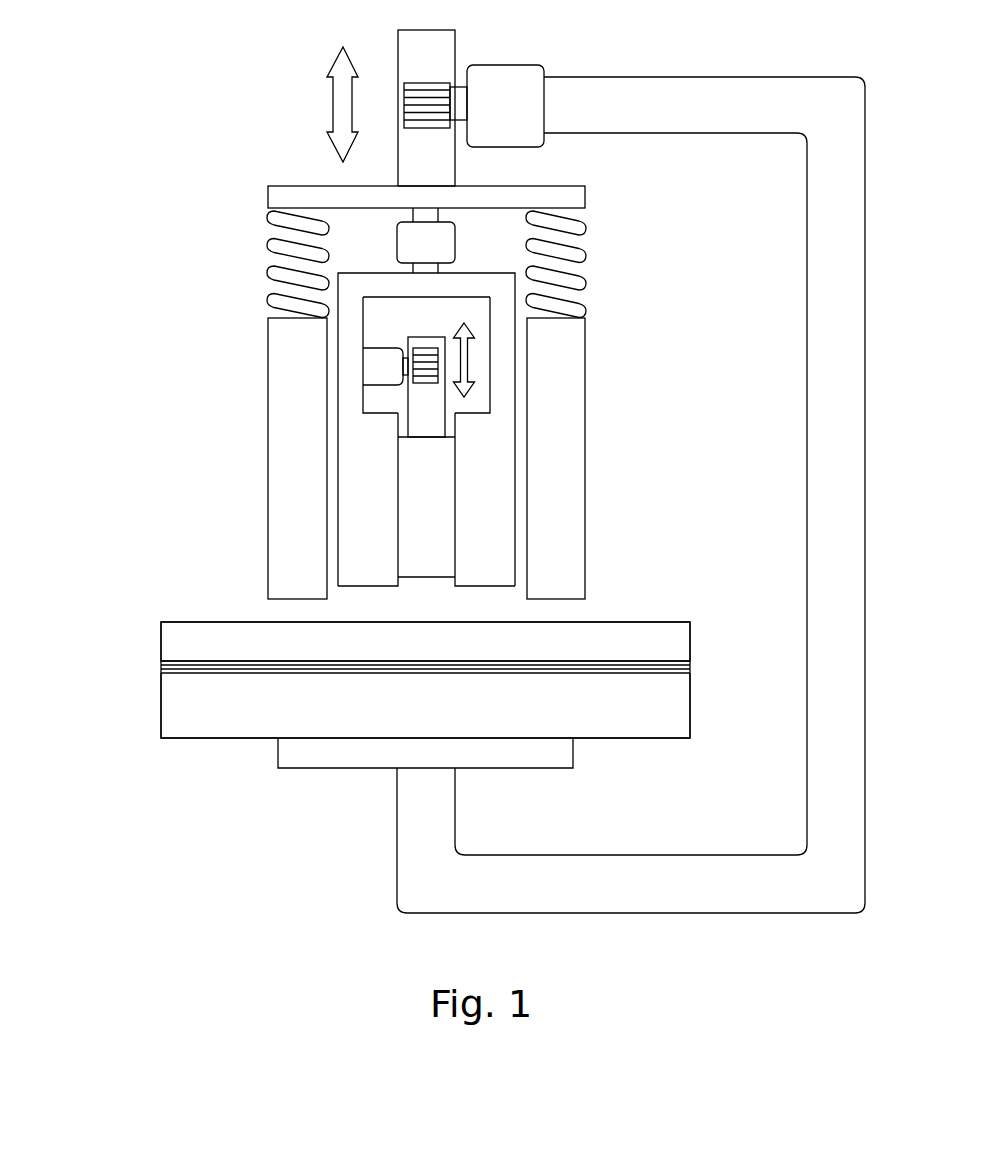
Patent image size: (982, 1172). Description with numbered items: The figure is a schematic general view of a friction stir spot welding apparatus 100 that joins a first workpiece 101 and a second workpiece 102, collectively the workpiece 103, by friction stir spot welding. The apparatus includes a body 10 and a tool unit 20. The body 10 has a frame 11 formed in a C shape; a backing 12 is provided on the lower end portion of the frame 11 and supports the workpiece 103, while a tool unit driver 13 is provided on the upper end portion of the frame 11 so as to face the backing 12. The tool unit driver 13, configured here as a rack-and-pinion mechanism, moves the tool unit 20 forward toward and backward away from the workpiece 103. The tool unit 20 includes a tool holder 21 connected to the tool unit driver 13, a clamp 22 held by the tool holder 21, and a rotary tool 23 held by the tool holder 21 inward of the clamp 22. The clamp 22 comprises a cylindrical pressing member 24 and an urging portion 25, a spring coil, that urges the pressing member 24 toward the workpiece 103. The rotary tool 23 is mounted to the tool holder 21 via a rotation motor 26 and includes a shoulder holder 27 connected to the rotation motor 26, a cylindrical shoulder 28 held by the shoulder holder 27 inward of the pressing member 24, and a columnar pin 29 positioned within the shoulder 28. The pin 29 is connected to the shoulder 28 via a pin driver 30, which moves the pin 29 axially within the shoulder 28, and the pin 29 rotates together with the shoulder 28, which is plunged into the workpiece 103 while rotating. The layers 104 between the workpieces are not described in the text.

The friction stir spot welding apparatus 100 is at (183, 63).
The body 10 is at (870, 412).
The frame 11 is at (813, 508).
The backing 12 is at (318, 770).
The tool unit driver 13 is at (492, 73).
The tool unit 20 is at (252, 383).
The tool holder 21 is at (587, 197).
The clamp 22 is at (640, 252).
The rotary tool 23 is at (373, 265).
The pressing member 24 is at (575, 355).
The urging portion 25 is at (582, 262).
The rotation motor 26 is at (455, 243).
The shoulder holder 27 is at (443, 288).
The shoulder 28 is at (378, 585).
The pin 29 is at (432, 575).
The pin driver 30 is at (380, 353).
The first workpiece 101 is at (160, 635).
The second workpiece 102 is at (160, 708).
The workpiece 103 is at (83, 617).
The adhesive layer 104 is at (160, 661).